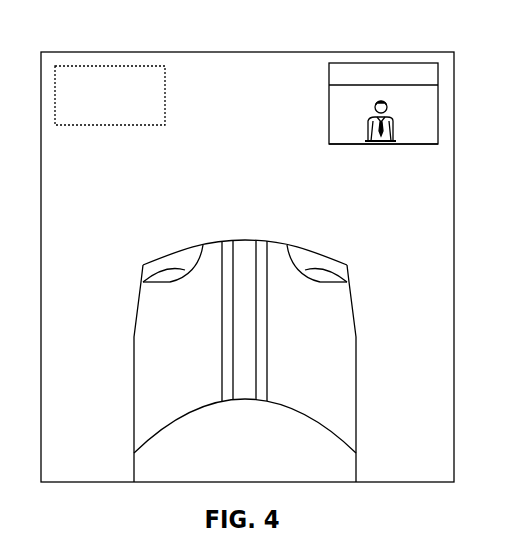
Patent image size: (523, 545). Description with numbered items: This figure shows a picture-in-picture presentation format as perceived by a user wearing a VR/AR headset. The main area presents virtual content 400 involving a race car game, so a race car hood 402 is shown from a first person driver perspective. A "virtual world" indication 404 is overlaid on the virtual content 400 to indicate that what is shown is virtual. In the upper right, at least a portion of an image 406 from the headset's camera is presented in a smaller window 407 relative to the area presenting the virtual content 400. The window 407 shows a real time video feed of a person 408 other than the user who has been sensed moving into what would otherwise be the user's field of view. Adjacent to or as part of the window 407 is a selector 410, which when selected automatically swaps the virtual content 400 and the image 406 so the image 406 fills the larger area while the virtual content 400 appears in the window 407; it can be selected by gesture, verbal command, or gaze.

The virtual content 400 is at (260, 57).
The race car hood 402 is at (318, 411).
The virtual world indication 404 is at (115, 125).
The image 406 is at (337, 132).
The window 407 is at (347, 150).
The person 408 is at (398, 123).
The selector 410 is at (427, 70).